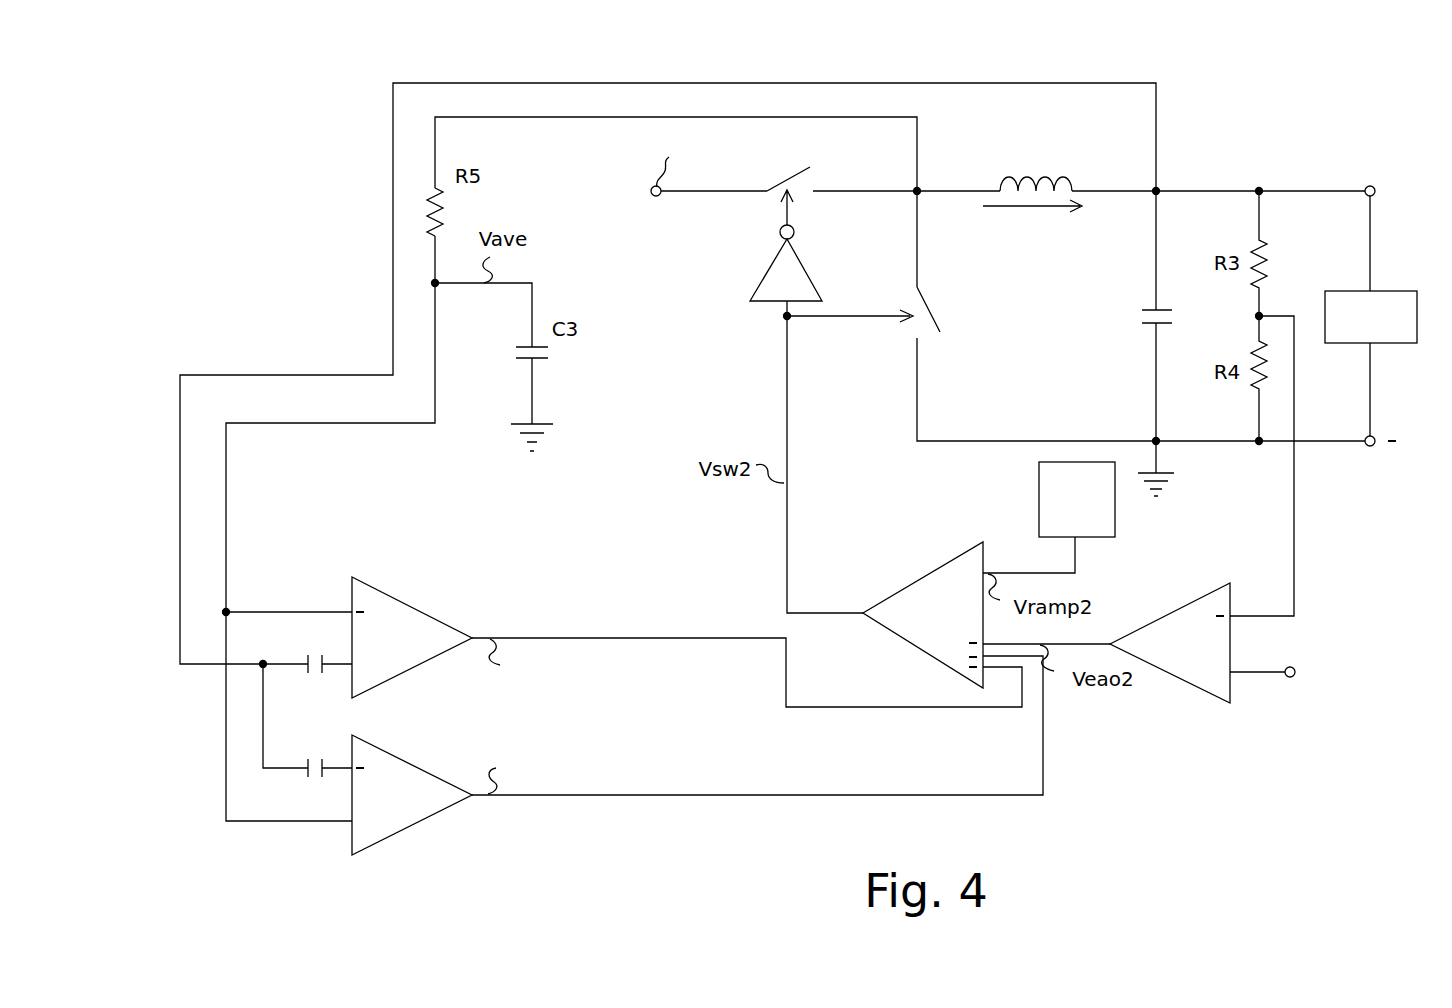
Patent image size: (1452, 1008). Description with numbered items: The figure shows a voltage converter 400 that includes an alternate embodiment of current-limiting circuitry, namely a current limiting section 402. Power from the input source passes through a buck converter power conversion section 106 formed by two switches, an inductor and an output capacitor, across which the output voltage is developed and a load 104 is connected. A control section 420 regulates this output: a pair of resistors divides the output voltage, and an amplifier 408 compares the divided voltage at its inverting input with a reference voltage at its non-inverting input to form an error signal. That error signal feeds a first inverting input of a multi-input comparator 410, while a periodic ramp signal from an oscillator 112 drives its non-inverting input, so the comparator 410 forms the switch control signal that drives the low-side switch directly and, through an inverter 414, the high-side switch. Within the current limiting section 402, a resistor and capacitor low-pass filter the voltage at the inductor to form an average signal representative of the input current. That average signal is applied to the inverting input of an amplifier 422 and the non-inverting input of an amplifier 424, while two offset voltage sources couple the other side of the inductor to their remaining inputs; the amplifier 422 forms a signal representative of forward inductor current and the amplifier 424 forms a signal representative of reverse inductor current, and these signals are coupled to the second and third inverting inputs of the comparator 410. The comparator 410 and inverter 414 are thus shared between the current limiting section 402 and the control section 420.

The voltage converter 400 is at (761, 72).
The current limiting section 402 is at (468, 695).
The load 104 is at (1398, 344).
The power conversion section 106 is at (1024, 382).
The oscillator 112 is at (1058, 504).
The multi-input comparator 410 is at (937, 568).
The inverter 414 is at (761, 281).
The control section 420 is at (1235, 642).
The amplifier 408 is at (1232, 704).
The amplifier 422 is at (398, 601).
The amplifier 424 is at (398, 759).